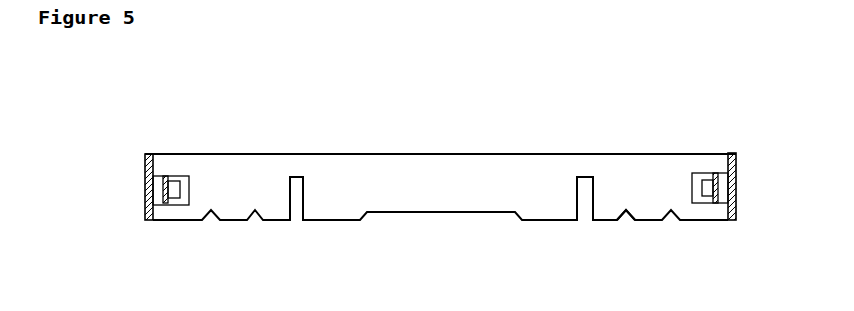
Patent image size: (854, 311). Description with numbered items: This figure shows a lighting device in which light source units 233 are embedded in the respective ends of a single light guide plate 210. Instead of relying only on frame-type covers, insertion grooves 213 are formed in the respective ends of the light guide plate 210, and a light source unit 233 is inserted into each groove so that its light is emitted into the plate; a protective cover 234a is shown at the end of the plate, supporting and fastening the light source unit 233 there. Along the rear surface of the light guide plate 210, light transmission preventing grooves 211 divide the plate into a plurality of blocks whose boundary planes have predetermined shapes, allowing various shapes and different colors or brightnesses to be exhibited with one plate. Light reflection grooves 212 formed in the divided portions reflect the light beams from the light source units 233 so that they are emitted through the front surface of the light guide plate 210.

The light guide plate 210 is at (612, 168).
The light transmission preventing groove 211 is at (293, 210).
The light reflection groove 212 is at (626, 212).
The insertion groove 213 is at (702, 173).
The light source unit 233 is at (174, 184).
The protective cover 234a is at (145, 184).